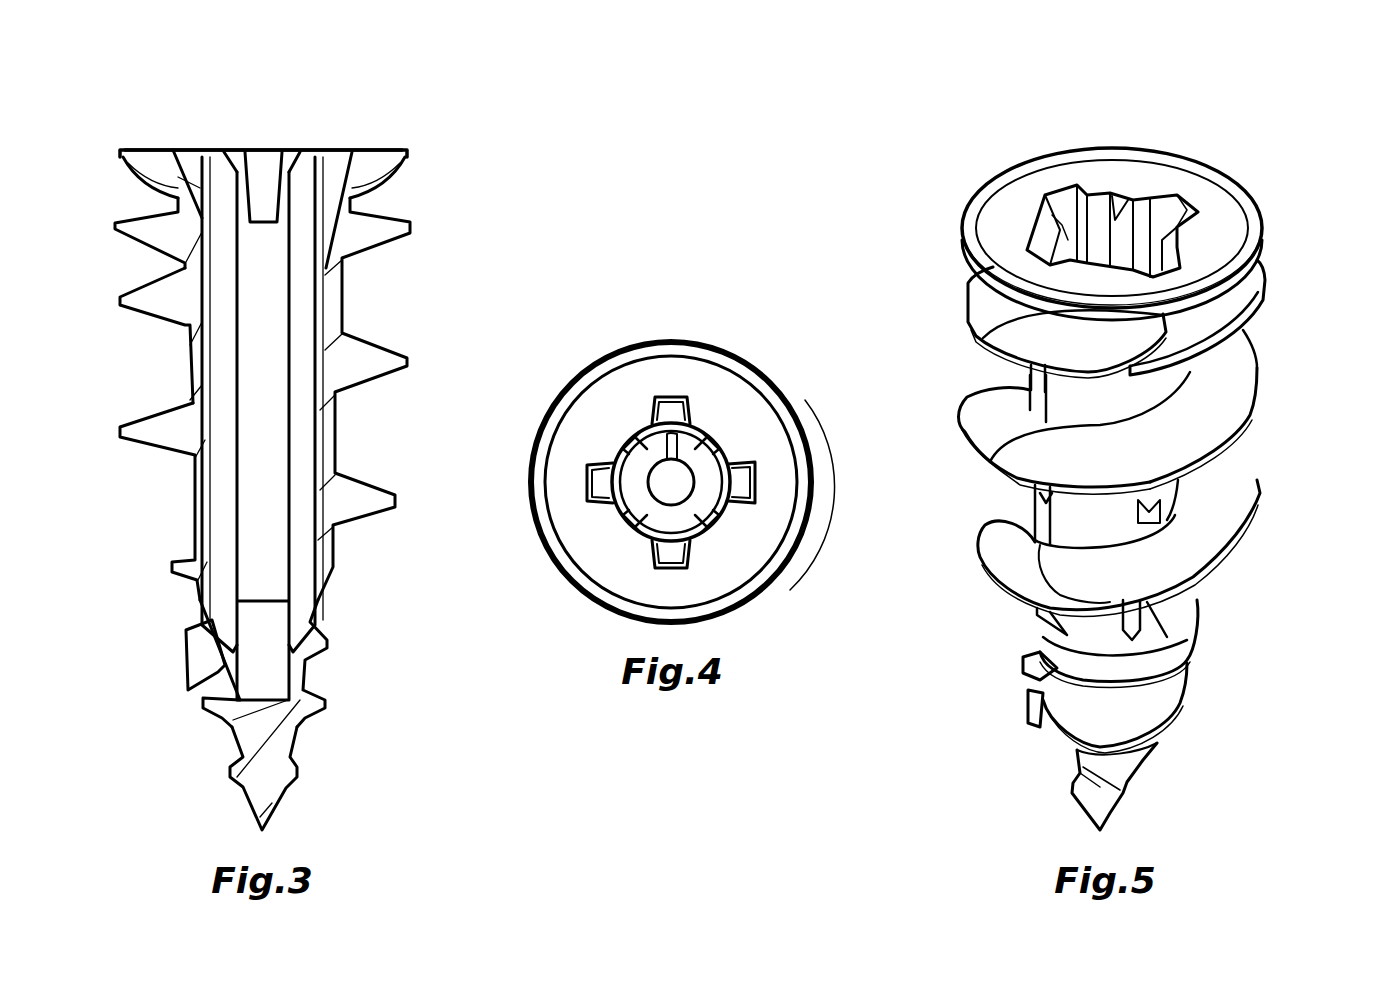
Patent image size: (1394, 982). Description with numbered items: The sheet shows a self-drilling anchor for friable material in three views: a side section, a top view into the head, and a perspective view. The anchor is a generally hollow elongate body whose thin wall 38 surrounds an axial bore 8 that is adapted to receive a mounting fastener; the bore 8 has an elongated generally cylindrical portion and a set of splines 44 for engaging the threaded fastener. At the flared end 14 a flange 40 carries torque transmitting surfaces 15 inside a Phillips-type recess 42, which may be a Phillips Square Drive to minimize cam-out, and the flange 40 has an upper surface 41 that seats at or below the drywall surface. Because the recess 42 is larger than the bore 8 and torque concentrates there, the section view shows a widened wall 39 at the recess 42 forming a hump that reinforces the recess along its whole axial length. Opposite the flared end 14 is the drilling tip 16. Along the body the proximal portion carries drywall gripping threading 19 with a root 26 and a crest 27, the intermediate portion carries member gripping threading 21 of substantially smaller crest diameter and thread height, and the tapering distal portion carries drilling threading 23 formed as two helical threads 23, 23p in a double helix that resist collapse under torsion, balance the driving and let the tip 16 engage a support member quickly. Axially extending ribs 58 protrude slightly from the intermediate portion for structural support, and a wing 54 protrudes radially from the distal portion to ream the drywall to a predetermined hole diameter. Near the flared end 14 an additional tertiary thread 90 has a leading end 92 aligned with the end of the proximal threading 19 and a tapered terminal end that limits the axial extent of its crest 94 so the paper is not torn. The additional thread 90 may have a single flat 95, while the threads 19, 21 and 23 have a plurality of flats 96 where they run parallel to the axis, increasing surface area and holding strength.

In FIG. 3, the axial bore 8 is at (275, 290).
In FIG. 4, the axial bore 8 is at (677, 490).
In FIG. 3, the flared end 14 is at (373, 173).
In FIG. 3, the torque transmitting surfaces 15 is at (335, 160).
In FIG. 4, the torque transmitting surfaces 15 is at (668, 556).
In FIG. 5, the torque transmitting surfaces 15 is at (1185, 205).
In FIG. 3, the drilling tip 16 is at (272, 812).
In FIG. 5, the drilling tip 16 is at (1110, 830).
In FIG. 5, the drywall gripping threading 19 is at (1020, 328).
In FIG. 5, the member gripping threading 21 is at (1020, 560).
In FIG. 5, the drilling threading 23 is at (1165, 645).
In FIG. 5, the helical thread 23p is at (1170, 686).
In FIG. 5, the root 26 is at (1017, 375).
In FIG. 4, the crest 27 is at (805, 546).
In FIG. 5, the crest 27 is at (1003, 297).
In FIG. 3, the thin wall 38 is at (198, 498).
In FIG. 3, the widened wall 39 is at (178, 210).
In FIG. 3, the flange 40 is at (407, 154).
In FIG. 3, the upper surface 41 is at (377, 148).
In FIG. 4, the upper surface 41 is at (770, 478).
In FIG. 5, the upper surface 41 is at (1153, 178).
In FIG. 4, the Phillips-type recess 42 is at (669, 481).
In FIG. 5, the Phillips-type recess 42 is at (1062, 200).
In FIG. 3, the splines 44 is at (215, 372).
In FIG. 4, the splines 44 is at (708, 446).
In FIG. 5, the splines 44 is at (1120, 200).
In FIG. 3, the wing 54 is at (200, 660).
In FIG. 5, the ribs 58 is at (1165, 637).
In FIG. 3, the additional thread 90 is at (153, 230).
In FIG. 5, the additional thread 90 is at (1240, 297).
In FIG. 5, the leading end 92 is at (1135, 385).
In FIG. 3, the crest 94 is at (116, 227).
In FIG. 4, the crest 94 is at (548, 552).
In FIG. 5, the crest 94 is at (1275, 292).
In FIG. 5, the flat 95 is at (1262, 265).
In FIG. 5, the flats 96 is at (995, 440).